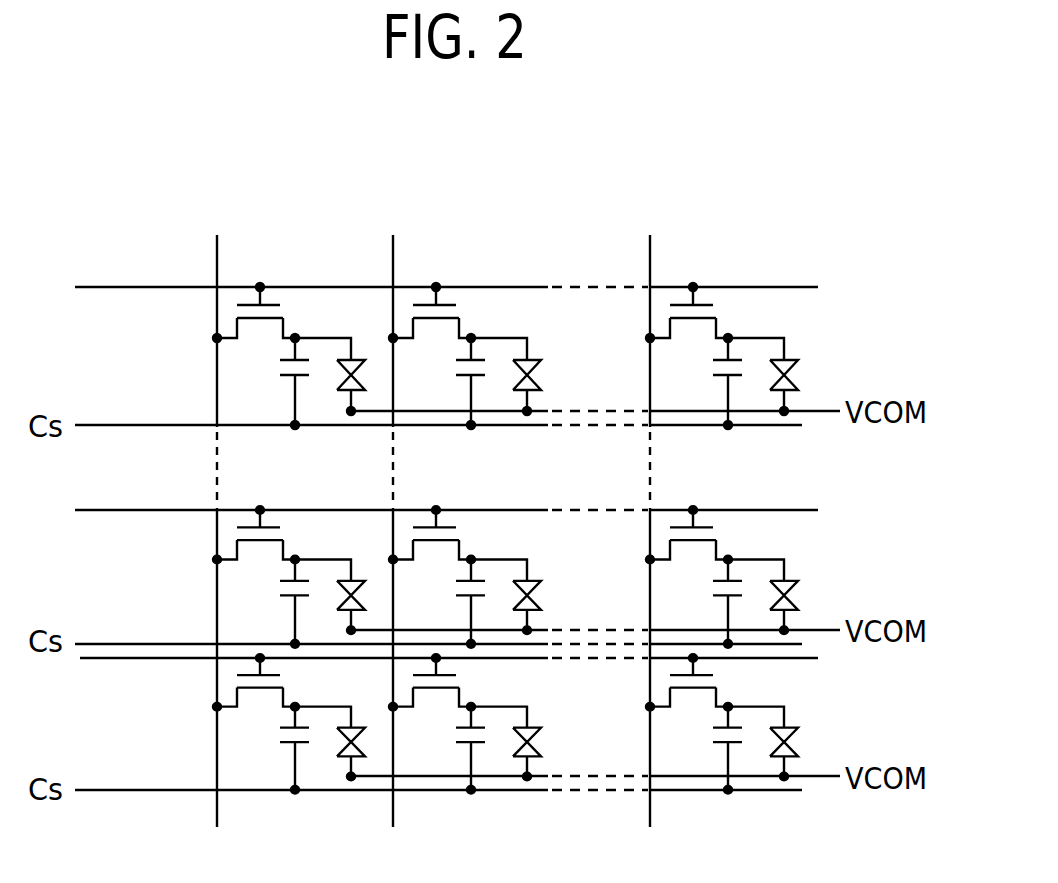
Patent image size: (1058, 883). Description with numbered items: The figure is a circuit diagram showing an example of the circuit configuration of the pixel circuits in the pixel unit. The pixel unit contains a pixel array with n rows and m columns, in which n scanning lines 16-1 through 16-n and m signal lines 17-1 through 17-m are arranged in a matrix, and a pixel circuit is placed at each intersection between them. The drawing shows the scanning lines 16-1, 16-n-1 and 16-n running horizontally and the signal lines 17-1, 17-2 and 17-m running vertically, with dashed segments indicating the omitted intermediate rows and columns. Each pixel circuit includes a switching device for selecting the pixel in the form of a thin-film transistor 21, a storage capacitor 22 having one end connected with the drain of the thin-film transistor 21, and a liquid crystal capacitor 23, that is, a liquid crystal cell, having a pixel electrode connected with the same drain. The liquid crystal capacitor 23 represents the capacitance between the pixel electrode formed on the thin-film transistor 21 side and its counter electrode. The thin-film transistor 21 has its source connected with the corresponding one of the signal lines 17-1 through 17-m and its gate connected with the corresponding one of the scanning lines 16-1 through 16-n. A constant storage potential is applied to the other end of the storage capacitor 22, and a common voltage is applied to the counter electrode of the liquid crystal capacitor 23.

The signal line 17-1 is at (217, 268).
The signal line 17-2 is at (393, 268).
The signal line 17-m is at (650, 268).
The scanning line 16-1 is at (111, 290).
The scanning line 16-n-1 is at (111, 513).
The scanning line 16-n is at (111, 661).
The thin-film transistor 21 is at (270, 312).
The storage capacitor 22 is at (268, 381).
The liquid crystal capacitor 23 is at (338, 357).